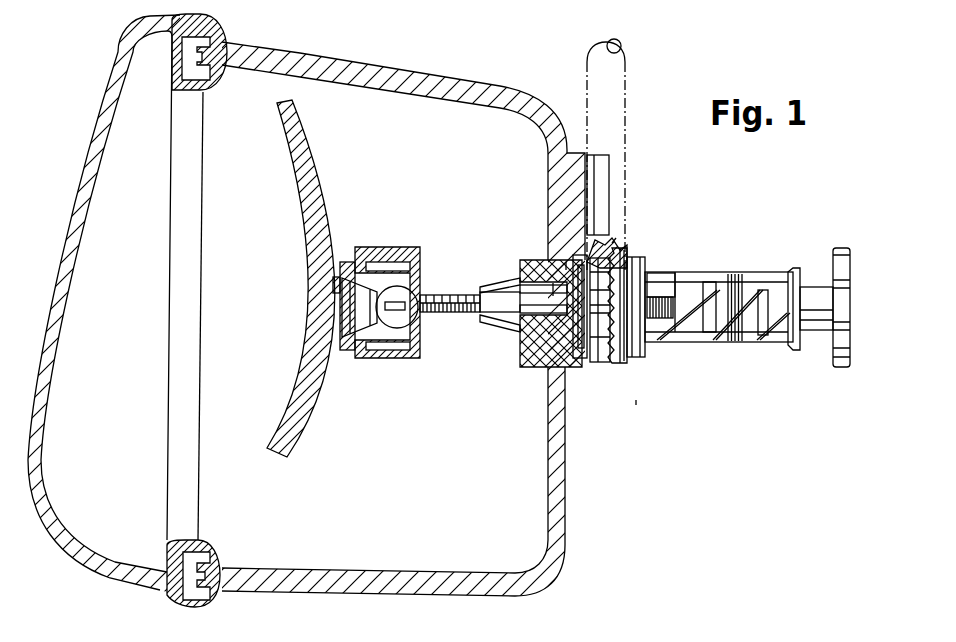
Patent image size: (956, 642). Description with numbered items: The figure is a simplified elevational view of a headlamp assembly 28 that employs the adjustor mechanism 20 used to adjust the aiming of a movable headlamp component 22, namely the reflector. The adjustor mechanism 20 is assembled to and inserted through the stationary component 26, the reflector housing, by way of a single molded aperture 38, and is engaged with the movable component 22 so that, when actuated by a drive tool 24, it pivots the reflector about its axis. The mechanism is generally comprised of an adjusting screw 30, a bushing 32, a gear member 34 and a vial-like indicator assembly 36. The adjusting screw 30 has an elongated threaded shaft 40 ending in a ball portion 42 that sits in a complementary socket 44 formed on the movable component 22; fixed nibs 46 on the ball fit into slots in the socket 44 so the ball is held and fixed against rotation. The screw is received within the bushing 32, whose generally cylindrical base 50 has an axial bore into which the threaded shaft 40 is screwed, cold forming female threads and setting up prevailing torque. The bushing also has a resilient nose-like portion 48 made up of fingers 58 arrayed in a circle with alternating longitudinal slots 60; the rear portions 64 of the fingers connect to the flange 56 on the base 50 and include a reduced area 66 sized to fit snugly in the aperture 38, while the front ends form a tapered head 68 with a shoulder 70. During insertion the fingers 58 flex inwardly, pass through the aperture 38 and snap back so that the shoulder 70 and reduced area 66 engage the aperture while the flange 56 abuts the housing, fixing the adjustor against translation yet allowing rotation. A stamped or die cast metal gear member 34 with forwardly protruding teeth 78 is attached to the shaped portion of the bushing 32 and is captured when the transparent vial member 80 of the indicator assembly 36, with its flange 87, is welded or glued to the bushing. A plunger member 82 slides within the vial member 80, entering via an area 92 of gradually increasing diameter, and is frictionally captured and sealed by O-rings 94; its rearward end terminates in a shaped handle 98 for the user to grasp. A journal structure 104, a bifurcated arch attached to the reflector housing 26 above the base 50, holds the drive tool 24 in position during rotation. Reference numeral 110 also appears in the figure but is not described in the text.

The adjustor mechanism 20 is at (636, 409).
The movable headlamp component 22 is at (283, 455).
The drive tool 24 is at (612, 72).
The stationary component 26 is at (493, 97).
The headlamp assembly 28 is at (288, 44).
The adjusting screw 30 is at (447, 315).
The bushing 32 is at (573, 352).
The gear member 34 is at (634, 248).
The vial-like indicator assembly 36 is at (745, 352).
The aperture 38 is at (533, 352).
The elongated threaded shaft 40 is at (447, 294).
The ball portion 42 is at (412, 354).
The socket 44 is at (372, 340).
The nibs 46 is at (408, 300).
The nose-like portion 48 is at (513, 335).
The base 50 is at (602, 350).
The flange 56 is at (590, 258).
The fingers 58 is at (496, 292).
The longitudinal slots 60 is at (513, 312).
The rear portions of the fingers 64 is at (565, 266).
The reduced area 66 is at (553, 287).
The tapered head 68 is at (497, 301).
The shoulder 70 is at (511, 342).
The teeth 78 is at (618, 364).
The vial member 80 is at (773, 277).
The plunger member 82 is at (815, 285).
The flange 87 is at (658, 258).
The area of gradually increasing diameter 92 is at (790, 351).
The O-rings 94 is at (763, 282).
The shaped handle 98 is at (843, 347).
The journal structure 104 is at (597, 163).
The fastener 110 is at (612, 243).